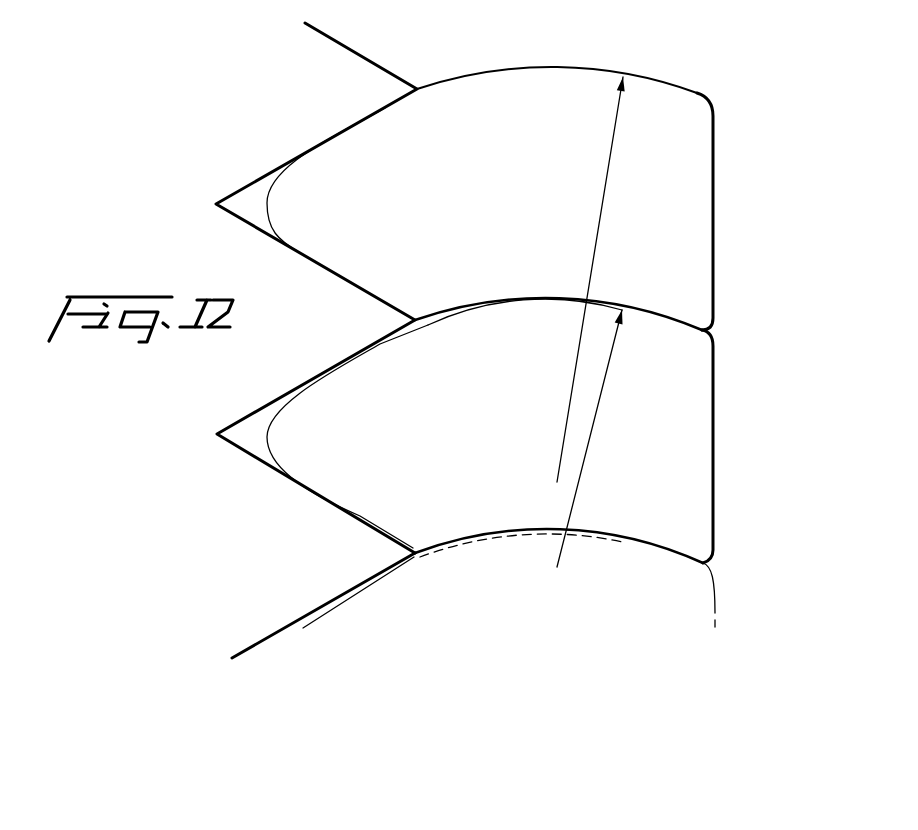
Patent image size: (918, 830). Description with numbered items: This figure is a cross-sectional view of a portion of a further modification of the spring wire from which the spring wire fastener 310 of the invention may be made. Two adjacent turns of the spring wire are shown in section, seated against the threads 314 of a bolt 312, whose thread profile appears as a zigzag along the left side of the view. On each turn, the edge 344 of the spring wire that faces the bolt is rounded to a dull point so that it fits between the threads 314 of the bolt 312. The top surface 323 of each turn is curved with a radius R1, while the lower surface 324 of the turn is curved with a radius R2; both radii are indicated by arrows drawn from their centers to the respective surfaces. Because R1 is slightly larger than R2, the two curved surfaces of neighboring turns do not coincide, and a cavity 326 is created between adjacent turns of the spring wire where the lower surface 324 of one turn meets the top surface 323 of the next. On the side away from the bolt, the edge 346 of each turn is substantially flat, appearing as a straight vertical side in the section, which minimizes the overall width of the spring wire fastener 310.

The spring wire fastener 310 is at (717, 170).
The bolt 312 is at (320, 623).
The threads 314 is at (252, 650).
The top surface 323 is at (585, 70).
The lower surface 324 is at (507, 300).
The cavity 326 is at (543, 297).
The edge 344 is at (297, 450).
The edge 346 is at (705, 415).
The radius of top surface R1 is at (608, 162).
The radius of lower surface R2 is at (598, 398).